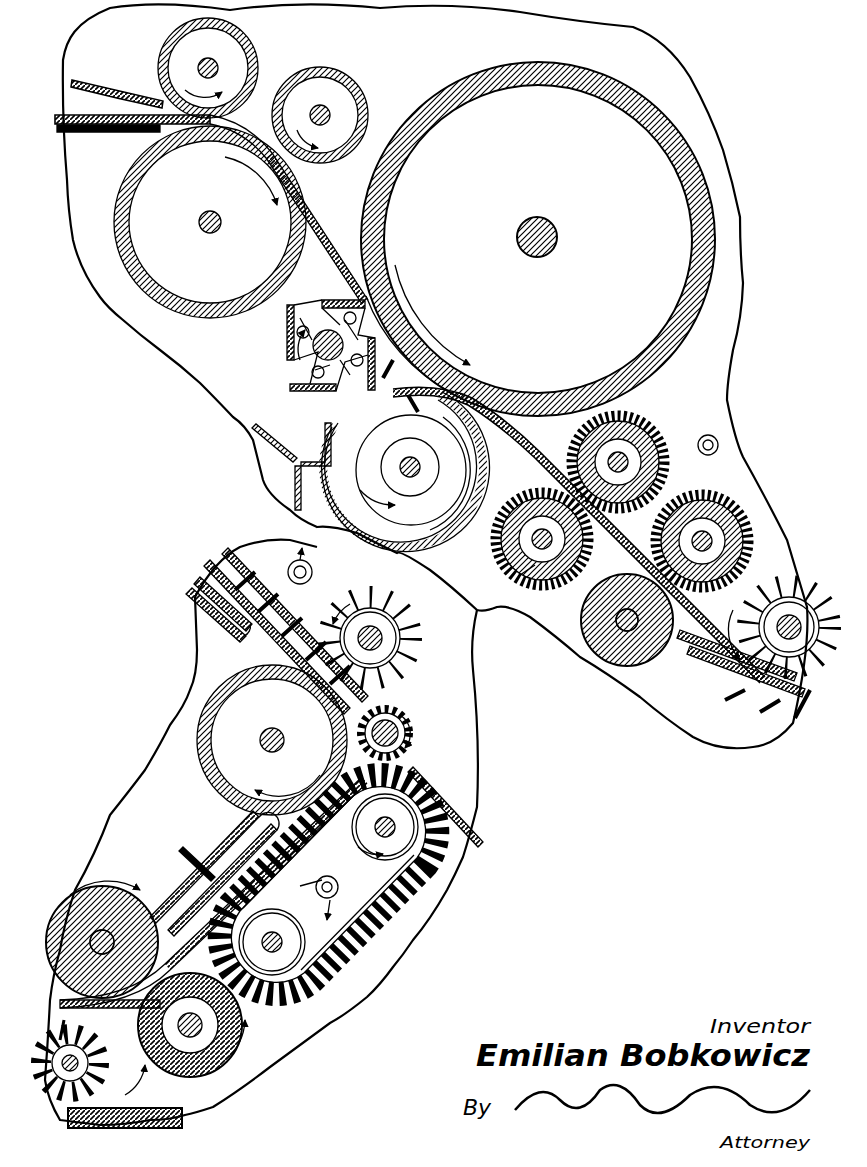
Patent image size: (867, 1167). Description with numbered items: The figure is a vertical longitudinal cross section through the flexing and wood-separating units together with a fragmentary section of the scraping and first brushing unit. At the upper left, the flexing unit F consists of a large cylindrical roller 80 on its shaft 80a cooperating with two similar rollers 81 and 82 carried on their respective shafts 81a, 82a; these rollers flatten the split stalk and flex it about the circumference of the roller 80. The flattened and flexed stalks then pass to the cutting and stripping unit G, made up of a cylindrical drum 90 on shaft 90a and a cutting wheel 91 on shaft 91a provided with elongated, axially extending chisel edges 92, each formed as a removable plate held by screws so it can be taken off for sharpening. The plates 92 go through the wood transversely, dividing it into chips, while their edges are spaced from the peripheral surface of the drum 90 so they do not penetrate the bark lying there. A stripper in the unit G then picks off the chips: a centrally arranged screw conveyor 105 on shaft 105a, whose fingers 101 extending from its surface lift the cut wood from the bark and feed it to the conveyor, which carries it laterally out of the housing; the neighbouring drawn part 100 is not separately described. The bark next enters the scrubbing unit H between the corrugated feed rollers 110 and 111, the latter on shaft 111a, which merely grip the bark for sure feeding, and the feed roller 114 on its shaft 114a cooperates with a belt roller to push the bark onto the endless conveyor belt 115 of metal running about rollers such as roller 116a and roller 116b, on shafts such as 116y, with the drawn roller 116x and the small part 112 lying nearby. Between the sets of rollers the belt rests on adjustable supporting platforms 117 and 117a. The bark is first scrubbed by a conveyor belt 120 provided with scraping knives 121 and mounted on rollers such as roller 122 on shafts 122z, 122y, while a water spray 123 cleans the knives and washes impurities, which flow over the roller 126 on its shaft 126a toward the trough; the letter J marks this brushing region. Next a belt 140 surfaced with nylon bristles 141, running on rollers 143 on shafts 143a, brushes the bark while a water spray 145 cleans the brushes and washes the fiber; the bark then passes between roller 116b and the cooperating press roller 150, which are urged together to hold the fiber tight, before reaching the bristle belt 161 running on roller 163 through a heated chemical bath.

In FIG. 17, the flexing unit F is at (105, 42).
In FIG. 17, the cutting and stripping unit G is at (660, 102).
In FIG. 17, the scrubbing unit H is at (800, 525).
In FIG. 17, the brush section J is at (445, 730).
In FIG. 17, the large cylindrical roller 80 is at (122, 253).
In FIG. 17, the shaft 80a is at (207, 233).
In FIG. 17, the roller 81 is at (235, 50).
In FIG. 17, the shaft 81a is at (200, 68).
In FIG. 17, the roller 82 is at (340, 88).
In FIG. 17, the shaft 82a is at (330, 115).
In FIG. 17, the cylindrical drum 90 is at (655, 338).
In FIG. 17, the shaft 90a is at (560, 238).
In FIG. 17, the cutting wheel 91 is at (285, 333).
In FIG. 17, the shaft 91a is at (290, 365).
In FIG. 17, the chisel edges 92 is at (330, 300).
In FIG. 17, the spiral roller 100 is at (395, 475).
In FIG. 17, the fingers 101 is at (360, 540).
In FIG. 17, the screw conveyor 105 is at (372, 440).
In FIG. 17, the shaft 105a is at (400, 468).
In FIG. 17, the feed roller 110 is at (495, 566).
In FIG. 17, the feed roller 111 is at (650, 428).
In FIG. 17, the shaft 111a is at (670, 448).
In FIG. 17, the pin 112 is at (720, 442).
In FIG. 17, the feed roller 114 is at (722, 505).
In FIG. 17, the gear shaft 114a is at (758, 509).
In FIG. 17, the endless conveyor belt 115 is at (530, 612).
In FIG. 17, the roller 116a is at (615, 630).
In FIG. 18, the roller 116a is at (210, 786).
In FIG. 17, the roller 116x is at (600, 636).
In FIG. 18, the roller 116x is at (56, 905).
In FIG. 18, the shaft 116y is at (260, 735).
In FIG. 18, the roller 116b is at (105, 895).
In FIG. 17, the supporting platform 117 is at (715, 690).
In FIG. 18, the supporting platform 117 is at (190, 610).
In FIG. 18, the supporting platform 117a is at (220, 840).
In FIG. 17, the conveyor belt 120 is at (765, 730).
In FIG. 17, the scraping knives 121 is at (783, 598).
In FIG. 18, the scraping knives 121 is at (384, 638).
In FIG. 17, the roller 122 is at (770, 640).
In FIG. 18, the shaft 122y is at (392, 664).
In FIG. 17, the shaft 122z is at (795, 700).
In FIG. 18, the water spray 123 is at (285, 568).
In FIG. 18, the roller 126 is at (415, 712).
In FIG. 18, the gear shaft 126a is at (420, 735).
In FIG. 18, the belt 140 is at (430, 866).
In FIG. 18, the bristles 141 is at (485, 845).
In FIG. 18, the rollers 143 is at (420, 800).
In FIG. 18, the shafts 143a is at (290, 950).
In FIG. 18, the water spray 145 is at (335, 900).
In FIG. 18, the press roller 150 is at (180, 1085).
In FIG. 18, the belt 161 is at (60, 1100).
In FIG. 18, the roller 163 is at (55, 1050).